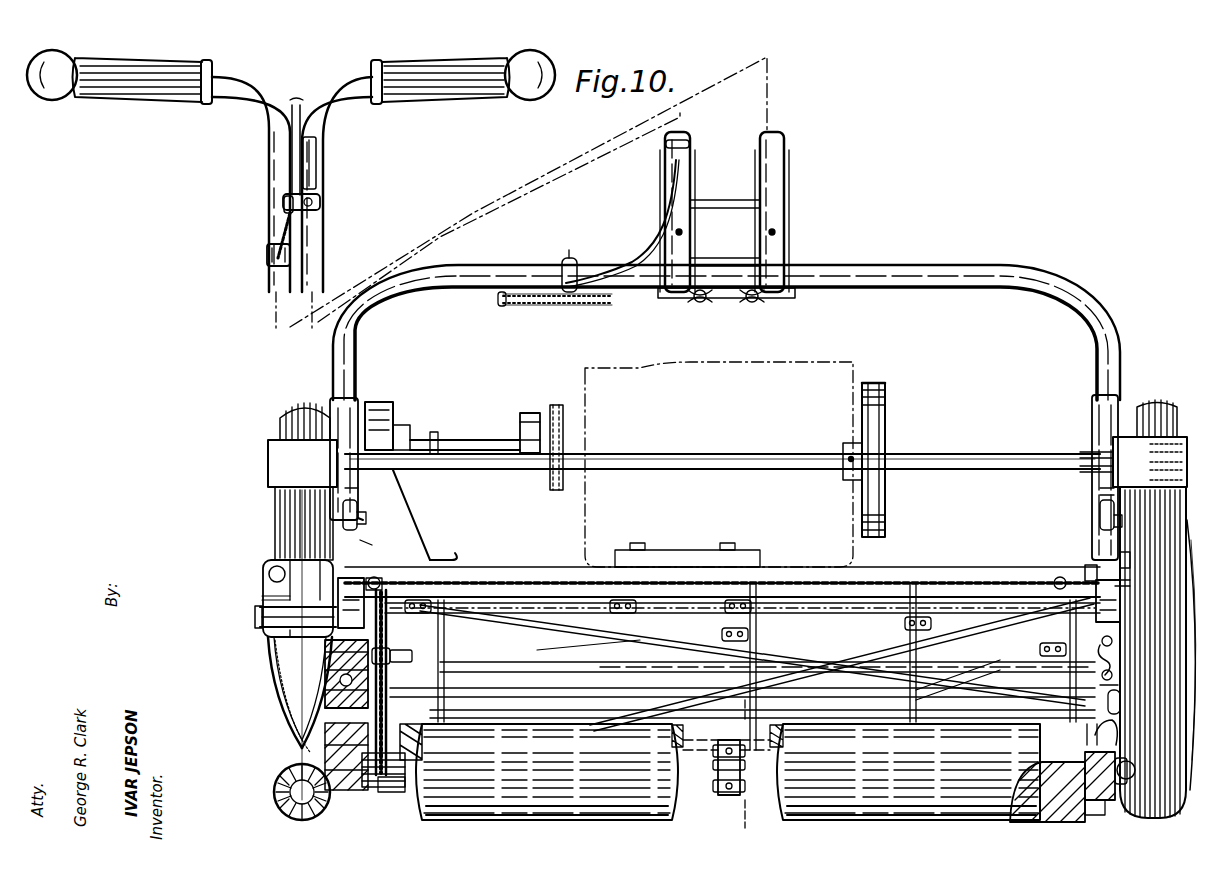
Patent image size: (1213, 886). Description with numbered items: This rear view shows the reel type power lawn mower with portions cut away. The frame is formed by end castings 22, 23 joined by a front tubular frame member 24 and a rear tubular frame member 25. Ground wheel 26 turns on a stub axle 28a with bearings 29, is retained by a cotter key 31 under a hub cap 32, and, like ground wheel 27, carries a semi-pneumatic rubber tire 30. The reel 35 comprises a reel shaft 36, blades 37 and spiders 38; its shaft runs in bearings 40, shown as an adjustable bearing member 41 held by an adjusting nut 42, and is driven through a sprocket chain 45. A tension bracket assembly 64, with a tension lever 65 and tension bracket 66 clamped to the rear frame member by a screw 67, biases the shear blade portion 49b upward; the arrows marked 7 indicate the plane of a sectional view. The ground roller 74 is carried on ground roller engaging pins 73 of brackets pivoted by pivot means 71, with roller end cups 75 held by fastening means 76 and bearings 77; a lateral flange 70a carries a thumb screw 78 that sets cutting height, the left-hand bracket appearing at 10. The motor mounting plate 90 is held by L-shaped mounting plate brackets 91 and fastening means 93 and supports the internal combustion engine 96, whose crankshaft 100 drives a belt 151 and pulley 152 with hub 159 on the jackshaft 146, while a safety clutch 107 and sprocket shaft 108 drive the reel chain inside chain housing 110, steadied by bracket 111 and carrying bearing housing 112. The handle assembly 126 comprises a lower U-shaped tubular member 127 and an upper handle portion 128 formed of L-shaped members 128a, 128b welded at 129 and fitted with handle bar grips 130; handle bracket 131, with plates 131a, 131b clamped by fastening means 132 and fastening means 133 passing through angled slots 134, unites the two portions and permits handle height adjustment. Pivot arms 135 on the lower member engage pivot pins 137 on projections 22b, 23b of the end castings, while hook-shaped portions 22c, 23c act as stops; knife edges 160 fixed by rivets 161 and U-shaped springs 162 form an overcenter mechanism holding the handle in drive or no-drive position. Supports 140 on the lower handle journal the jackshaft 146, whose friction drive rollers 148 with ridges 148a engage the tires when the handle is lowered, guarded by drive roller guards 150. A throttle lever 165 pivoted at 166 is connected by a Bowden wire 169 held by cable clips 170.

The section line 7- 7 is at (736, 715).
The mower 10 is at (1143, 728).
The end casting 22 is at (402, 515).
The integral projection 22b is at (366, 518).
The hook-shaped portion 22c is at (375, 544).
The end casting 23 is at (1100, 596).
The integral projection 23b is at (1098, 514).
The hook-shaped portion 23c is at (1121, 560).
The front tubular frame member 24 is at (1092, 580).
The rear tubular frame member 25 is at (376, 790).
The ground wheel 26 is at (270, 572).
The ground wheel 27 is at (1165, 544).
The stub axle 28a is at (264, 590).
The bearing 29 is at (262, 640).
The rubber tire 30 is at (286, 412).
The cotter key 31 is at (262, 620).
The hub cap 32 is at (260, 607).
The reel 35 is at (531, 657).
The reel shaft 36 is at (937, 675).
The blade 37 is at (688, 634).
The spider 38 is at (445, 648).
The bearing 40 is at (390, 658).
The adjustable bearing member 41 is at (387, 636).
The adjusting nut 42 is at (324, 712).
The sprocket chain 45 is at (410, 660).
The bearing cap 49b is at (390, 793).
The tension bracket assembly 64 is at (758, 785).
The tension lever 65 is at (720, 793).
The tension bracket 66 is at (716, 744).
The screw 67 is at (700, 763).
The lateral flange 70a is at (418, 741).
The pivot means 71 is at (1143, 748).
The ground roller engaging pin 73 is at (1060, 778).
The ground roller 74 is at (866, 822).
The roller end cup 75 is at (1120, 786).
The fastening means 76 is at (1092, 808).
The bearing 77 is at (1084, 758).
The thumb screw 78 is at (388, 689).
The motor mounting plate 90 is at (931, 582).
The L-shaped mounting plate bracket 91 is at (421, 606).
The bolt 93 is at (378, 578).
The internal combustion engine 96 is at (641, 355).
The crankshaft 100 is at (560, 396).
The safety clutch 107 is at (523, 405).
The sprocket shaft 108 is at (446, 439).
The chain housing 110 is at (380, 401).
The bracket 111 is at (446, 558).
The bearing housing 112 is at (405, 424).
The handle assembly 126 is at (628, 215).
The lower U-shaped tubular member 127 is at (926, 272).
The upper handle portion 128 is at (514, 203).
The L-shaped tubular member 128a is at (325, 215).
The L-shaped tubular member 128b is at (268, 222).
The junction point 129 is at (298, 108).
The handle bar grip 130 is at (134, 98).
The handle bracket 131 is at (747, 221).
The sheet metal plate 131a is at (718, 200).
The sheet metal plate 131b is at (692, 236).
The fastening means 132 is at (768, 236).
The fastening means 133 is at (699, 302).
The slot 134 is at (790, 300).
The pivot arm 135 is at (362, 496).
The pivot pin 137 is at (345, 502).
The support 140 is at (335, 415).
The jackshaft 146 is at (719, 452).
The friction drive roller 148 is at (1117, 465).
The longitudinally extending ridge 148a is at (1117, 456).
The drive roller guard 150 is at (268, 461).
The belt 151 is at (871, 383).
The pulley 152 is at (893, 409).
The hub 159 is at (847, 480).
The knife edge 160 is at (342, 647).
The rivet 161 is at (1112, 648).
The U-shaped spring 162 is at (364, 598).
The throttle lever 165 is at (318, 158).
The pivot 166 is at (320, 196).
The Bowden wire 169 is at (268, 258).
The cable clip 170 is at (268, 266).